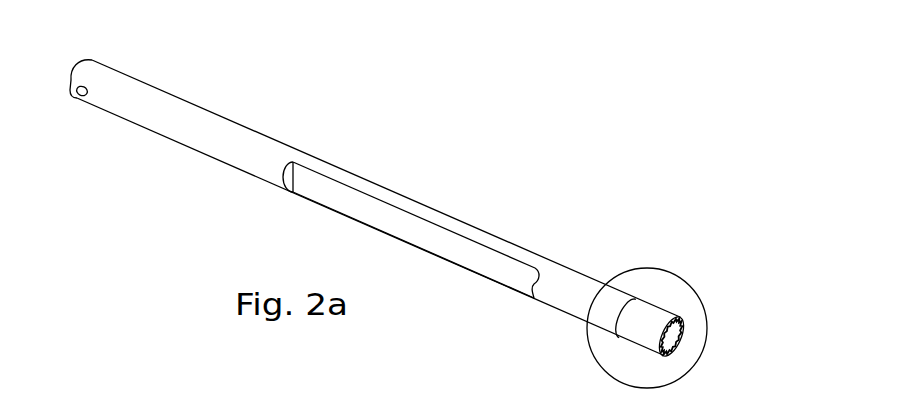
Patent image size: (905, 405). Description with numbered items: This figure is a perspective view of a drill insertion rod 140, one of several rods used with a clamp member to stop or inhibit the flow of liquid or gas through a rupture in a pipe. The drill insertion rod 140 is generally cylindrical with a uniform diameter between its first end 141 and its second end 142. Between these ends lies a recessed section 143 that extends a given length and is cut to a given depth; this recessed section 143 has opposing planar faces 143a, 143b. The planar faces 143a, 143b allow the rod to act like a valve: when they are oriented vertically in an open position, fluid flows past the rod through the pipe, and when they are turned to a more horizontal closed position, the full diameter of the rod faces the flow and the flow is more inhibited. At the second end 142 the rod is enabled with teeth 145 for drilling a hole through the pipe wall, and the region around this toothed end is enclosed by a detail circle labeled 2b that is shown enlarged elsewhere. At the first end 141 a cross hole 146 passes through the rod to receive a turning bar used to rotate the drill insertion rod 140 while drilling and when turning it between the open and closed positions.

The drill insertion rod 140 is at (262, 86).
The first end 141 is at (122, 75).
The second end 142 is at (657, 310).
The recessed section 143 is at (347, 185).
The planar face 143a is at (457, 265).
The planar face 143b is at (440, 205).
The teeth 145 is at (683, 342).
The cross hole 146 is at (78, 98).
The detail circle for Fig. 2b is at (682, 320).